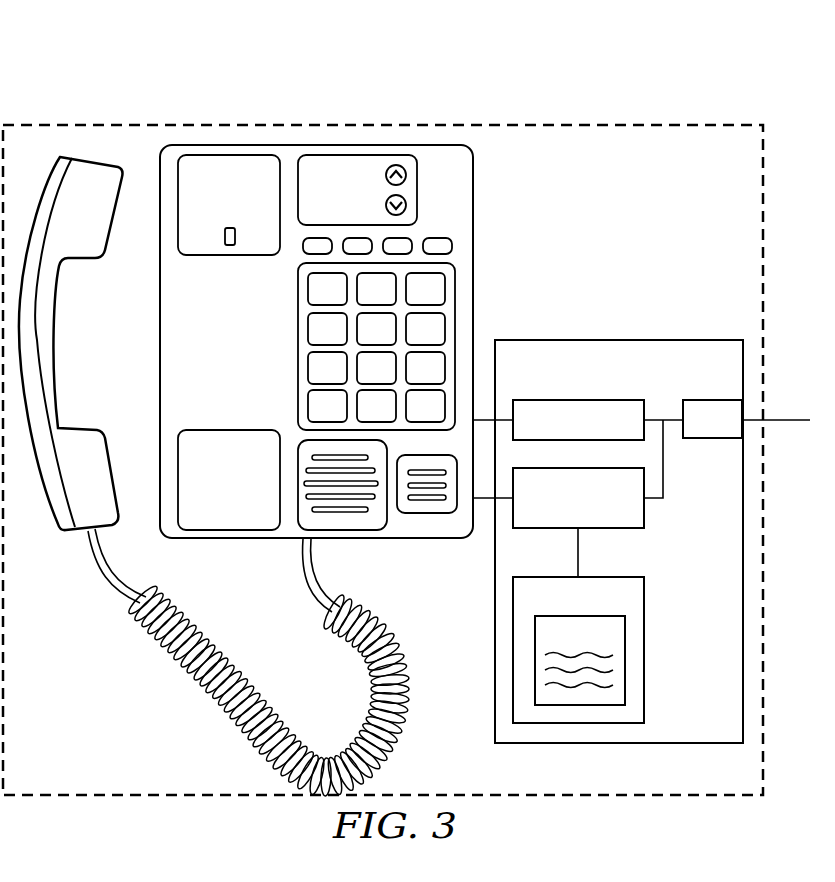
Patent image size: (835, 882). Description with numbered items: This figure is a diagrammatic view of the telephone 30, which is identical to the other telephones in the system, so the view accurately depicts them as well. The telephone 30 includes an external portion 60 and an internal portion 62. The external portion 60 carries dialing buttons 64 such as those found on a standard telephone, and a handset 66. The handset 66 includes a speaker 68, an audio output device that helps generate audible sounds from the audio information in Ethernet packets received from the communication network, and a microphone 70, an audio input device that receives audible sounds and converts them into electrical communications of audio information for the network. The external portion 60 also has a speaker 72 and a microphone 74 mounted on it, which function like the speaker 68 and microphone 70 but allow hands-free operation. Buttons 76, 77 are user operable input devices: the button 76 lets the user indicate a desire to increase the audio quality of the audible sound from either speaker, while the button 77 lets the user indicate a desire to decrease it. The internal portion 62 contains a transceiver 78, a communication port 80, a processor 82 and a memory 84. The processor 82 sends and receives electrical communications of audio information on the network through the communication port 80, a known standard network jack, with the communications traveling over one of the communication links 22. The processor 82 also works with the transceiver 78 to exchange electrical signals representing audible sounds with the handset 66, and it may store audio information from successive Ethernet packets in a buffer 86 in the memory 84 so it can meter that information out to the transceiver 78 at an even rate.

The telephone 30 is at (460, 125).
The external portion 60 is at (141, 348).
The internal portion 62 is at (608, 340).
The dialing buttons 64 is at (298, 352).
The handset 66 is at (60, 546).
The speaker 68 is at (103, 226).
The microphone 70 is at (118, 467).
The speaker 72 is at (348, 522).
The microphone 74 is at (427, 512).
The button 76 is at (407, 175).
The button 77 is at (407, 205).
The transceiver 78 is at (580, 400).
The communication port 80 is at (712, 400).
The processor 82 is at (645, 516).
The memory 84 is at (645, 640).
The buffer 86 is at (626, 670).
The communication link 22 is at (783, 420).